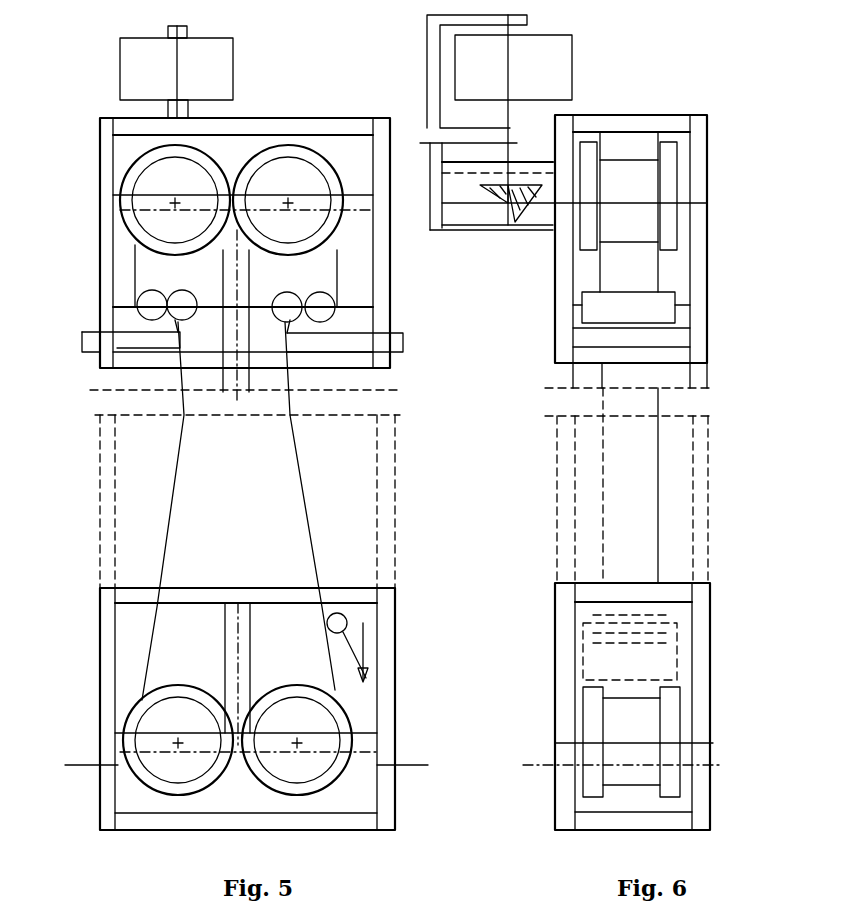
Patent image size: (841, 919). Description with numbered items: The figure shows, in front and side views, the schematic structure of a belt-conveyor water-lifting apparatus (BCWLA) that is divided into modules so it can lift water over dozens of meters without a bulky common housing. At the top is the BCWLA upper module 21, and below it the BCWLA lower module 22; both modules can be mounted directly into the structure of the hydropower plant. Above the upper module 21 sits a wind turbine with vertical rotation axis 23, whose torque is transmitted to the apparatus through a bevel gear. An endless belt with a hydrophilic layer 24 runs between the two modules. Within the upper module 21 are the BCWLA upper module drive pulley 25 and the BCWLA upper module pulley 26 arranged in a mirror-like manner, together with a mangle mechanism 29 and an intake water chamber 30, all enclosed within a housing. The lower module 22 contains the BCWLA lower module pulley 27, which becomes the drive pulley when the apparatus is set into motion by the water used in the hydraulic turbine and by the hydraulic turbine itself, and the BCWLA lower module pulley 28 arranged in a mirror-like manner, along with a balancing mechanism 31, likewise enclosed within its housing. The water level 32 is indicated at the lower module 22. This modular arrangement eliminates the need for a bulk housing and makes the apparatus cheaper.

In FIG. 5, the BCWLA upper module 21 is at (352, 266).
In FIG. 6, the BCWLA upper module 21 is at (587, 265).
In FIG. 5, the BCWLA lower module 22 is at (363, 797).
In FIG. 6, the BCWLA lower module 22 is at (583, 800).
In FIG. 5, the wind turbine with vertical rotation axis 23 is at (222, 75).
In FIG. 6, the wind turbine with vertical rotation axis 23 is at (470, 80).
In FIG. 5, the endless belt with a hydrophilic layer 24 is at (178, 460).
In FIG. 6, the endless belt with a hydrophilic layer 24 is at (602, 478).
In FIG. 5, the BCWLA upper module drive pulley 25 is at (129, 200).
In FIG. 6, the BCWLA upper module drive pulley 25 is at (668, 170).
In FIG. 5, the BCWLA upper module pulley arranged in a mirror-like manner 26 is at (185, 207).
In FIG. 5, the BCWLA lower module pulley 27 is at (123, 713).
In FIG. 6, the BCWLA lower module pulley 27 is at (670, 717).
In FIG. 5, the BCWLA lower module pulley arranged in a mirror-like manner 28 is at (187, 685).
In FIG. 5, the mangle mechanism 29 is at (244, 315).
In FIG. 6, the mangle mechanism 29 is at (600, 300).
In FIG. 5, the intake water chamber 30 is at (248, 358).
In FIG. 6, the intake water chamber 30 is at (583, 355).
In FIG. 5, the balancing mechanism 31 is at (395, 668).
In FIG. 6, the balancing mechanism 31 is at (597, 660).
In FIG. 5, the water level 32 is at (260, 765).
In FIG. 6, the water level 32 is at (606, 765).